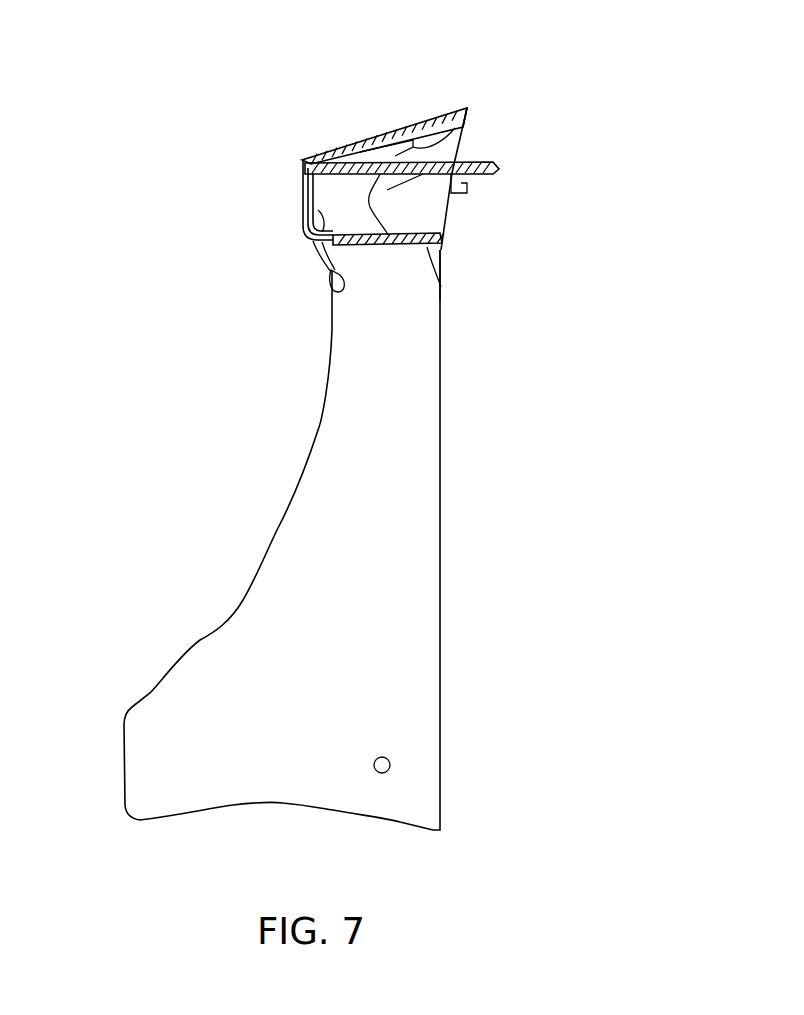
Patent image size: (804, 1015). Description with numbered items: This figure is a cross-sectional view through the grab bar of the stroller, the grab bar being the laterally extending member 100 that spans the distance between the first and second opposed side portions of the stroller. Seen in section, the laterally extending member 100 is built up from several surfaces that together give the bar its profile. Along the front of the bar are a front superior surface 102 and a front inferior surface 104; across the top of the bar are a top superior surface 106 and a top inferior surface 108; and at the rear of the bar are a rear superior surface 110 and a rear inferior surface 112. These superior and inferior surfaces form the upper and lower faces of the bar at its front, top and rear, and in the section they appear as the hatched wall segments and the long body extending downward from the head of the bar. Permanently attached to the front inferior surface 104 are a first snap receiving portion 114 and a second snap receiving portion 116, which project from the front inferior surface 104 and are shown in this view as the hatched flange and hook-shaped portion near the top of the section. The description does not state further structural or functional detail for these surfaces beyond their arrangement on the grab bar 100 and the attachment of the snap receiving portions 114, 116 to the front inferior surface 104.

The laterally extending member 100 is at (203, 375).
The front superior surface 102 is at (407, 117).
The front inferior surface 104 is at (465, 123).
The top superior surface 106 is at (302, 198).
The top inferior surface 108 is at (345, 290).
The rear superior surface 110 is at (441, 285).
The rear inferior surface 112 is at (437, 230).
The first snap receiving portion 114 is at (459, 183).
The second snap receiving portion 116 is at (463, 149).